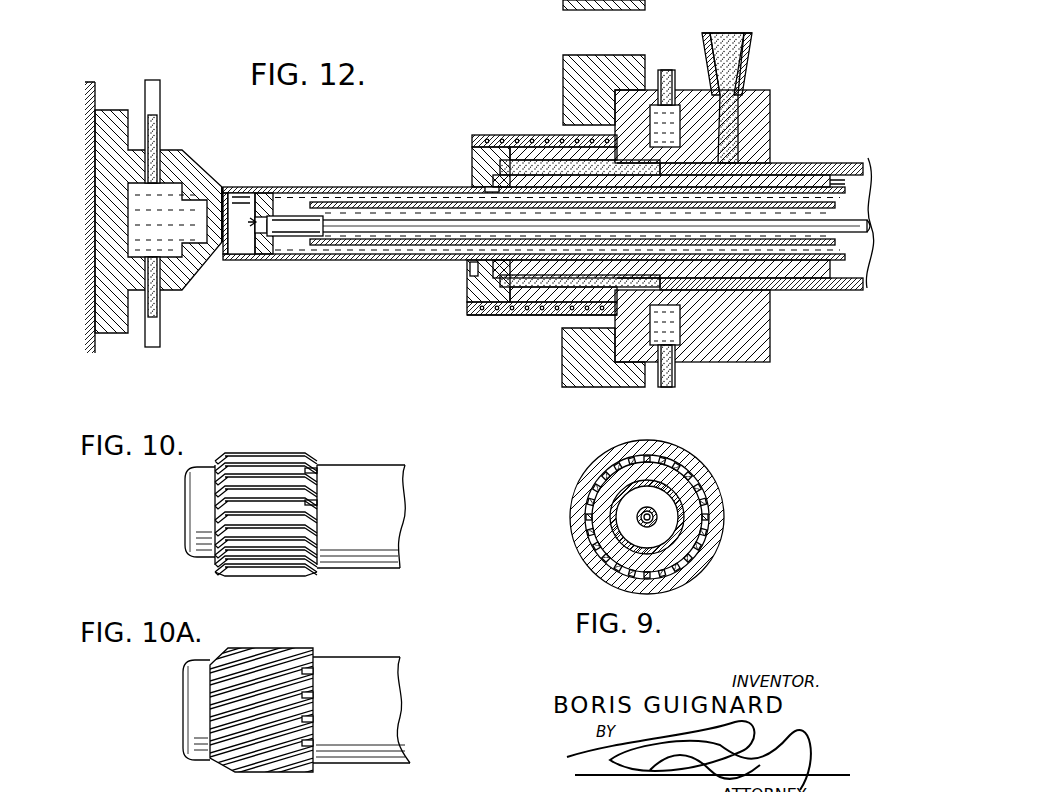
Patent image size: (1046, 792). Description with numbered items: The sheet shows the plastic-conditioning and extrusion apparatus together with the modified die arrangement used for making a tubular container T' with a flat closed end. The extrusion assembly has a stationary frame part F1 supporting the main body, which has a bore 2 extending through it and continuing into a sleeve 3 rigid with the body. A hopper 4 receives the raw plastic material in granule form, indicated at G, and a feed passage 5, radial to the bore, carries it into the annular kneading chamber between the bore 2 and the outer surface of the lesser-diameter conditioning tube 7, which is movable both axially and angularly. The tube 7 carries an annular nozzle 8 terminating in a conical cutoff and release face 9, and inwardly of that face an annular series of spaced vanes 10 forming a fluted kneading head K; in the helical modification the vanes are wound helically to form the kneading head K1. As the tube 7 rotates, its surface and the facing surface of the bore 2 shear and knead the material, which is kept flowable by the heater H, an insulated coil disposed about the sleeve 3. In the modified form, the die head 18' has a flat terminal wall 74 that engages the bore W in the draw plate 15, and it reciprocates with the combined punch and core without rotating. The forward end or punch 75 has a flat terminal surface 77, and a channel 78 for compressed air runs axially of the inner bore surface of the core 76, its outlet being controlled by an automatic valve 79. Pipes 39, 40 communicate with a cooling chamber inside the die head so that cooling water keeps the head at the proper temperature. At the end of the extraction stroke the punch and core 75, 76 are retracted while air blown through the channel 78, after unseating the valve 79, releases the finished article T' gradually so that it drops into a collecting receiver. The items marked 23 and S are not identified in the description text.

In FIG. 12, the wall 23 is at (94, 96).
In FIG. 12, the pipe 39 is at (160, 90).
In FIG. 12, the pipe 40 is at (162, 328).
In FIG. 12, the die head 18' is at (158, 220).
In FIG. 12, the flat terminal wall 74 is at (221, 233).
In FIG. 12, the punch 75 is at (263, 244).
In FIG. 12, the flat terminal surface 77 is at (252, 193).
In FIG. 12, the automatic valve 79 is at (252, 221).
In FIG. 12, the tubular container T' is at (534, 205).
In FIG. 12, the core 76 is at (327, 187).
In FIG. 12, the channel 78 is at (343, 233).
In FIG. 9, the channel 78 is at (639, 520).
In FIG. 12, the draw plate 15 is at (472, 150).
In FIG. 12, the bore W is at (480, 180).
In FIG. 12, the sleeve 3 is at (541, 152).
In FIG. 12, the annular nozzle 8 is at (512, 264).
In FIG. 12, the fluted kneading head K is at (566, 165).
In FIG. 10, the fluted kneading head K is at (270, 476).
In FIG. 10A, the helical kneading head K1 is at (287, 662).
In FIG. 12, the stationary frame part F1 is at (588, 70).
In FIG. 12, the bore 2 is at (622, 167).
In FIG. 9, the bore 2 is at (690, 471).
In FIG. 12, the raw plastic material G is at (727, 88).
In FIG. 12, the hopper 4 is at (751, 62).
In FIG. 12, the feed passage 5 is at (741, 128).
In FIG. 12, the plastic material conditioning tube 7 is at (783, 180).
In FIG. 10, the plastic material conditioning tube 7 is at (392, 487).
In FIG. 10A, the plastic material conditioning tube 7 is at (395, 706).
In FIG. 9, the plastic material conditioning tube 7 is at (690, 546).
In FIG. 12, the heater H is at (497, 304).
In FIG. 12, the shaft end S is at (842, 264).
In FIG. 10, the conical material cutoff and release face 9 is at (185, 500).
In FIG. 10A, the conical material cutoff and release face 9 is at (183, 711).
In FIG. 10, the vanes 10 is at (316, 502).
In FIG. 10A, the vanes 10 is at (305, 704).
In FIG. 9, the vanes 10 is at (702, 516).